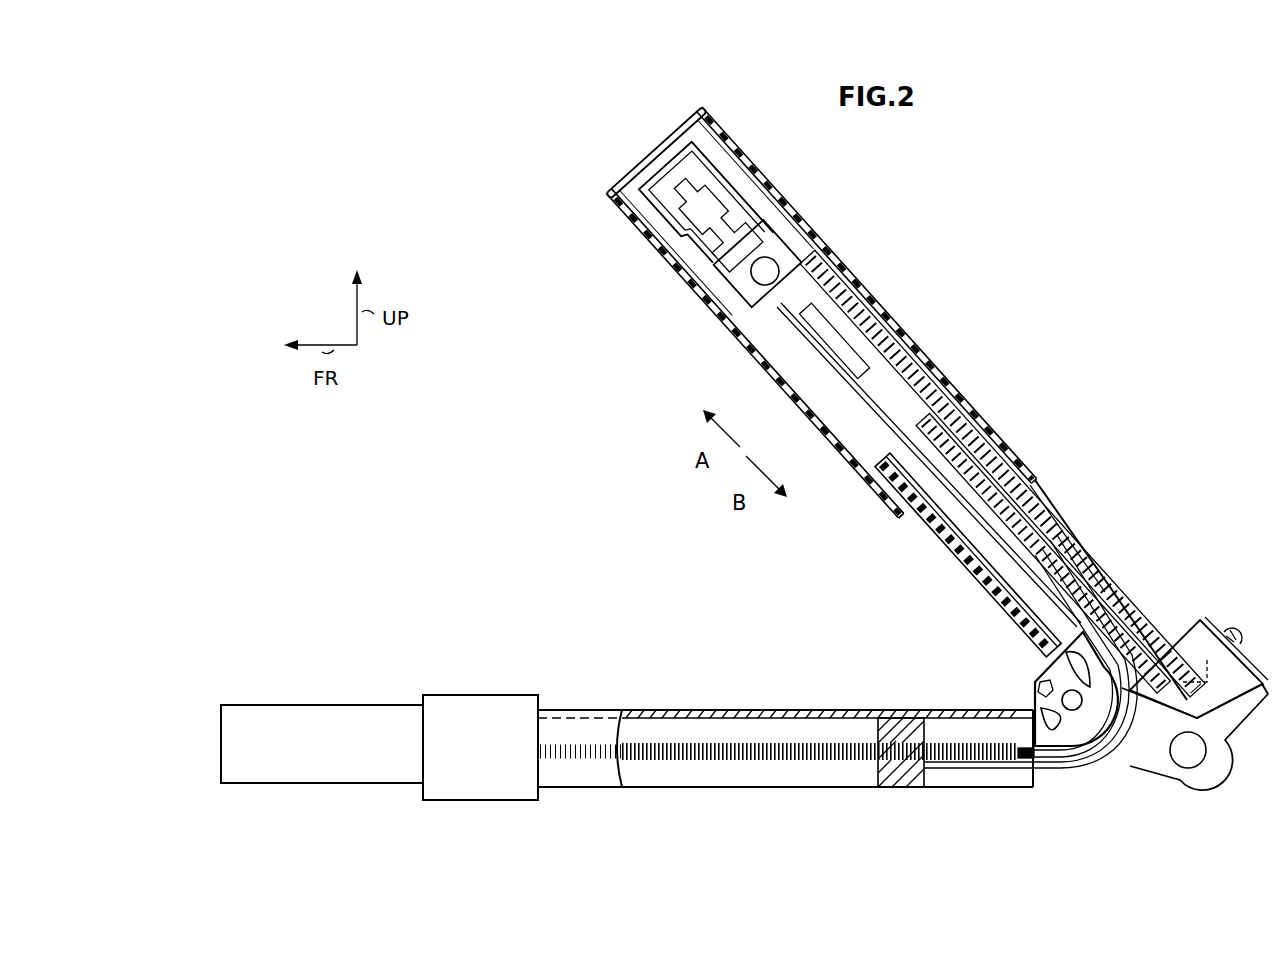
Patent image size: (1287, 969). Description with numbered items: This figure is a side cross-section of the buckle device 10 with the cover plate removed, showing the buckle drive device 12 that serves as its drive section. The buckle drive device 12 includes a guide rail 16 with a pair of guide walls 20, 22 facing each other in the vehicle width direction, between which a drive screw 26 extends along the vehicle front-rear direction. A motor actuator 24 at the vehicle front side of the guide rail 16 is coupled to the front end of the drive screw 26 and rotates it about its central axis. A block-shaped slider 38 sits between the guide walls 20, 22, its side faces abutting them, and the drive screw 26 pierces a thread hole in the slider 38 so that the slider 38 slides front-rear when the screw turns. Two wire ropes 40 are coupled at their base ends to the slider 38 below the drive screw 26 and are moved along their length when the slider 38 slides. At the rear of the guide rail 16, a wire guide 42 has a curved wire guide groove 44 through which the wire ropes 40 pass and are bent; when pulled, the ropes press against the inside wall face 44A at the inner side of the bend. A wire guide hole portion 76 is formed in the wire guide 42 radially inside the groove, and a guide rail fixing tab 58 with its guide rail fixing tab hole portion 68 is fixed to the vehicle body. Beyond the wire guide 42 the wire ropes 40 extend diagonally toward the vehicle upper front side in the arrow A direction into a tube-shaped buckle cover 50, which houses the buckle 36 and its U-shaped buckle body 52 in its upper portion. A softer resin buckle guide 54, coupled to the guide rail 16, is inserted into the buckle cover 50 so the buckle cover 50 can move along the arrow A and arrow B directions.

The buckle device 10 is at (990, 278).
The buckle drive device 12 is at (566, 656).
The guide rail 16 is at (662, 707).
The guide wall 20 is at (594, 780).
The guide wall 22 is at (713, 780).
The motor actuator 24 is at (397, 705).
The drive screw 26 is at (681, 770).
The buckle 36 is at (693, 259).
The slider 38 is at (896, 715).
The wire rope 40 is at (970, 770).
The wire guide 42 is at (1090, 764).
The wire guide groove 44 is at (1111, 754).
The inside wall face 44A is at (1058, 760).
The buckle cover 50 is at (812, 425).
The buckle body 52 is at (730, 282).
The buckle guide 54 is at (935, 545).
The guide rail fixing tab 58 is at (1157, 766).
The guide rail fixing tab hole portion 68 is at (1188, 764).
The wire guide hole portion 76 is at (1076, 705).